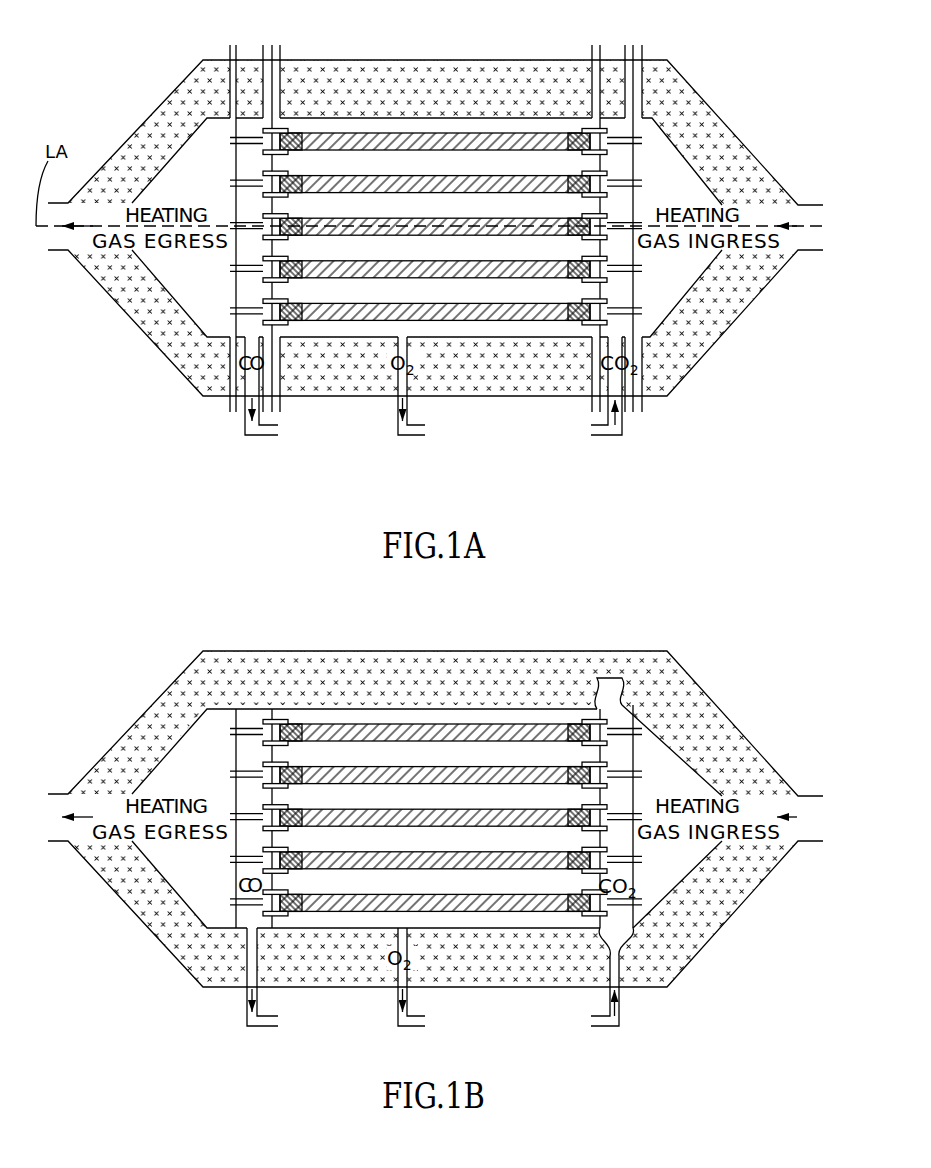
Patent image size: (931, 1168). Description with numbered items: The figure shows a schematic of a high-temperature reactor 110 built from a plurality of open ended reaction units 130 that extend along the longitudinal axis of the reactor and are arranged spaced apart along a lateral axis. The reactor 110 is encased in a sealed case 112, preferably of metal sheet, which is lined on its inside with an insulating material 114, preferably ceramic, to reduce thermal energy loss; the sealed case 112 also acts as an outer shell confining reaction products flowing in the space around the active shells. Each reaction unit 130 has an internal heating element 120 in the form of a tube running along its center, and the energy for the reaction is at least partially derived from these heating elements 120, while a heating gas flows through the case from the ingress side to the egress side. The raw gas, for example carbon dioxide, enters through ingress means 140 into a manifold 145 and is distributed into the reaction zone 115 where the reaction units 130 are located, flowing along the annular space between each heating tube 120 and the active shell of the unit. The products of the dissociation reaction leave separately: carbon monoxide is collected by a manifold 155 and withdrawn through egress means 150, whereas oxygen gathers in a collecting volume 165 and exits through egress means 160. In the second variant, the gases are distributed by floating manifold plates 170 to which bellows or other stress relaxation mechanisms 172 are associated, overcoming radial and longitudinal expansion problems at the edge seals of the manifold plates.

In FIG. 1A, the high-temperature reactor 110 is at (100, 300).
In FIG. 1A, the sealed case 112 is at (148, 338).
In FIG. 1A, the insulating material 114 is at (205, 360).
In FIG. 1A, the reaction zone 115 is at (515, 128).
In FIG. 1A, the heating element 120 is at (637, 175).
In FIG. 1A, the reaction unit 130 is at (432, 127).
In FIG. 1A, the ingress means 140 is at (627, 418).
In FIG. 1A, the manifold 145 is at (613, 113).
In FIG. 1A, the egress means 150 is at (280, 432).
In FIG. 1A, the manifold 155 is at (250, 125).
In FIG. 1A, the egress means 160 is at (425, 430).
In FIG. 1A, the collecting volume 165 is at (480, 368).
In FIG. 1B, the plates 170 is at (509, 851).
In FIG. 1B, the stress relaxation mechanisms 172 is at (669, 667).